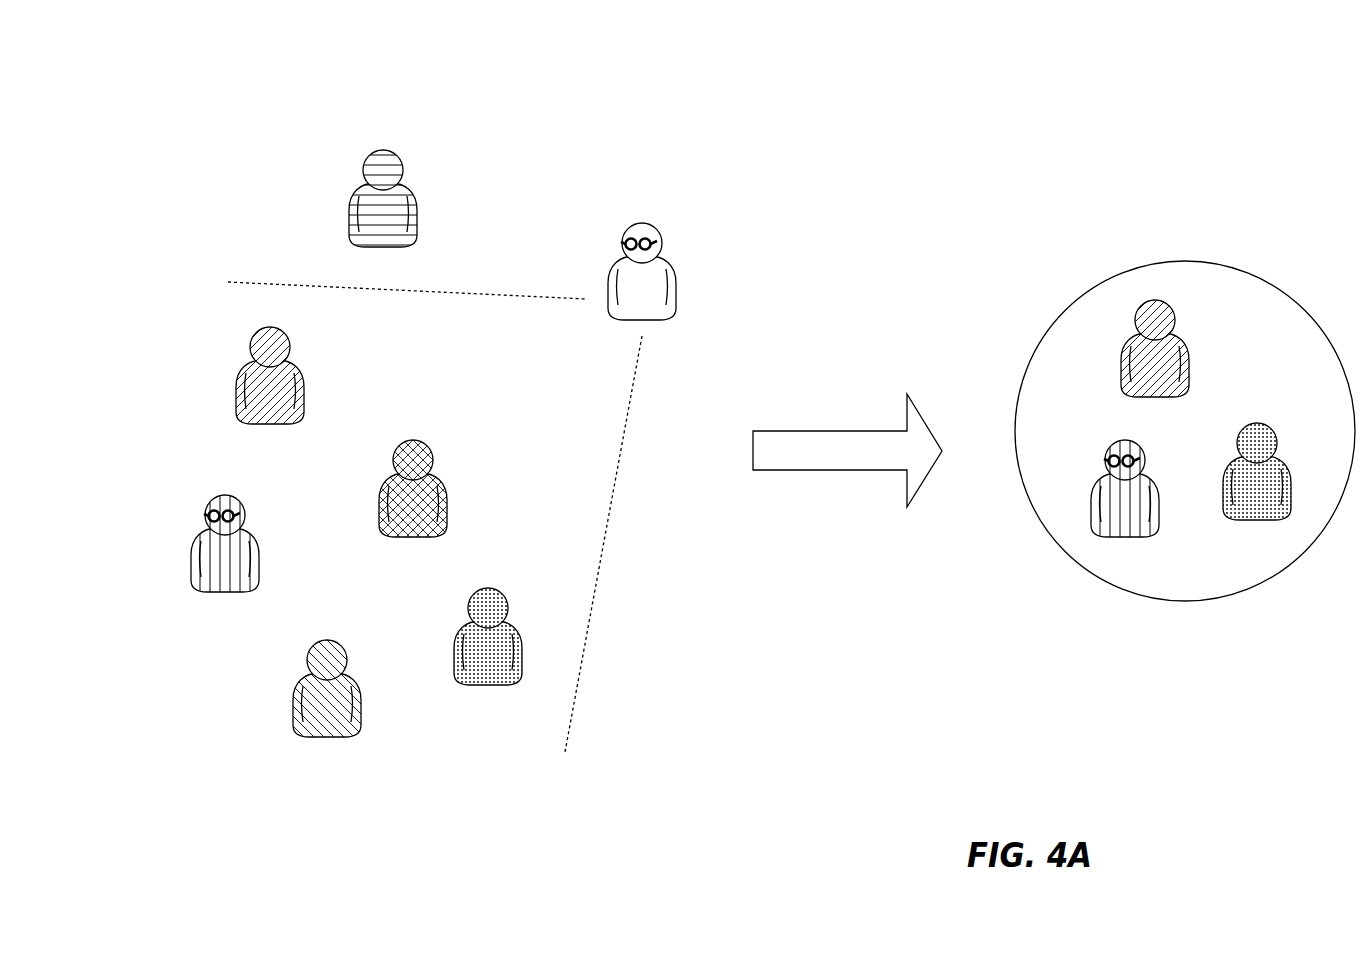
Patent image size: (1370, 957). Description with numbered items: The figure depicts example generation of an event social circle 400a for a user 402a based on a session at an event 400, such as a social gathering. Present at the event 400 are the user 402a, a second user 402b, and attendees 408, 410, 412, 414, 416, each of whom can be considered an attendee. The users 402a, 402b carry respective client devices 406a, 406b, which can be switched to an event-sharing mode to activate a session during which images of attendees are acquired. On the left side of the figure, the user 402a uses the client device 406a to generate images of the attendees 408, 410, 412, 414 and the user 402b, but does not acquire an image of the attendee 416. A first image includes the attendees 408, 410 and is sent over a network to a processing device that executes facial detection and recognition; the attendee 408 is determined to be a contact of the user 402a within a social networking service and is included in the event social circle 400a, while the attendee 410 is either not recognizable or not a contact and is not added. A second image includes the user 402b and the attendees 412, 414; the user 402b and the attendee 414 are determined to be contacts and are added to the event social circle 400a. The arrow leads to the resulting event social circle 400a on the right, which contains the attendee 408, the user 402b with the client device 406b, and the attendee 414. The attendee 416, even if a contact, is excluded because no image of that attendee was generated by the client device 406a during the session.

The event 400 is at (601, 128).
The event social circle 400a is at (1284, 357).
The user 402a is at (689, 250).
The user 402b is at (219, 593).
The client device 406a is at (687, 215).
The client device 406b is at (719, 463).
The attendee 408 is at (303, 378).
The attendee 410 is at (448, 492).
The attendee 412 is at (335, 636).
The attendee 414 is at (488, 688).
The attendee 416 is at (398, 151).